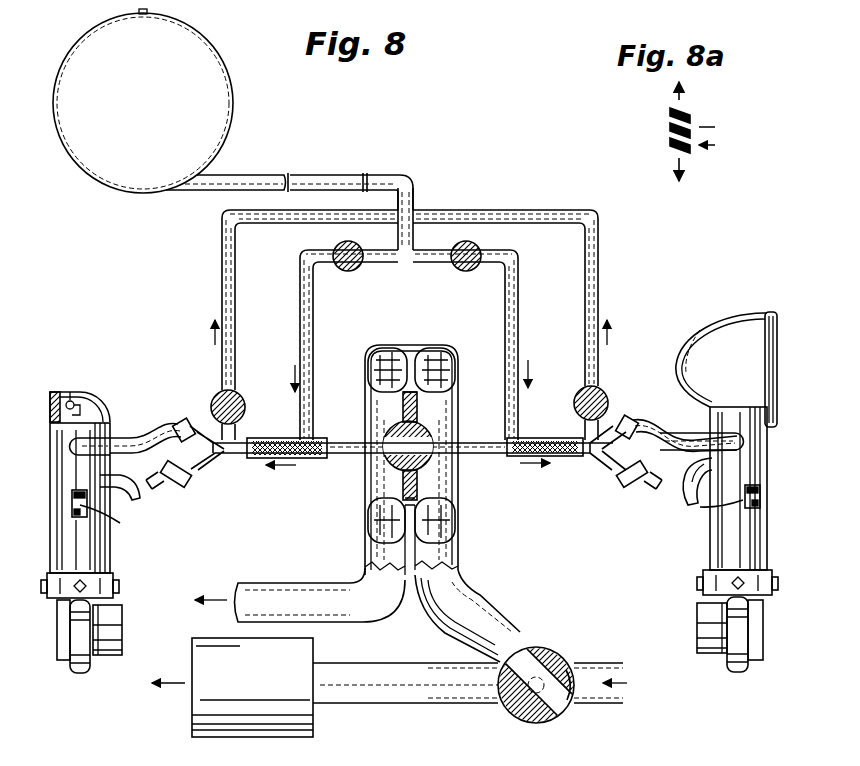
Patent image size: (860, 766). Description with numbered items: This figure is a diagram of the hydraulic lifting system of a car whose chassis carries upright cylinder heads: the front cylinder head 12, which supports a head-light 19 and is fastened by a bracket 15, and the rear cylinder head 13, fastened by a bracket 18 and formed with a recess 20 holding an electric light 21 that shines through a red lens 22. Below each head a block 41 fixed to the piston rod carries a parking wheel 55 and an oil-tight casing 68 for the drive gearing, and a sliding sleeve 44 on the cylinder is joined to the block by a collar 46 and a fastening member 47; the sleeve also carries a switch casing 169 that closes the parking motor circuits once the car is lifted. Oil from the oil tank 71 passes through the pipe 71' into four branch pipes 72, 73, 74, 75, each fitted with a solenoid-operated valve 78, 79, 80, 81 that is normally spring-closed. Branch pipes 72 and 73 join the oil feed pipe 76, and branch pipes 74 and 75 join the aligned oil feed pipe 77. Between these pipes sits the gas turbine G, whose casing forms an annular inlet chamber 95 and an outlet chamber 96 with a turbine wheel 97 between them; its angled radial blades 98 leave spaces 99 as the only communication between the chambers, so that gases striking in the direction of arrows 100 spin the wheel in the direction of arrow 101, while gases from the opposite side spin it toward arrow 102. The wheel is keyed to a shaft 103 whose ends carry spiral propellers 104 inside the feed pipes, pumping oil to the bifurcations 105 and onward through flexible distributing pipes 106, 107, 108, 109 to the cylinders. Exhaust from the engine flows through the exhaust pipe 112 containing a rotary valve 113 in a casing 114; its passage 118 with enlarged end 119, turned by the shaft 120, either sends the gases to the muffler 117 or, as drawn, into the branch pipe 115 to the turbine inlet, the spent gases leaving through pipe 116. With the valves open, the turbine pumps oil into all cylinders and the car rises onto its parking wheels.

In FIG. 8, the oil tank 71 is at (143, 101).
In FIG. 8, the pipe 71' is at (289, 175).
In FIG. 8, the branch pipe 72 is at (237, 268).
In FIG. 8, the branch pipe 73 is at (313, 297).
In FIG. 8, the branch pipe 74 is at (505, 296).
In FIG. 8, the branch pipe 75 is at (585, 268).
In FIG. 8, the oil feed pipe 76 is at (270, 460).
In FIG. 8, the oil feed pipe 77 is at (560, 458).
In FIG. 8, the valve 78 is at (216, 399).
In FIG. 8, the valve 79 is at (348, 271).
In FIG. 8, the valve 80 is at (461, 270).
In FIG. 8, the valve 81 is at (604, 396).
In FIG. 8, the gas turbine G is at (456, 392).
In FIG. 8, the annular inlet chamber 95 is at (442, 352).
In FIG. 8, the annular outlet chamber 96 is at (379, 349).
In FIG. 8, the turbine wheel 97 is at (418, 483).
In FIG. 8, the radial blades 98 is at (410, 383).
In FIG. 8A, the radial blades 98 is at (670, 127).
In FIG. 8A, the spaces between blades 99 is at (670, 142).
In FIG. 8A, the arrows 100 is at (712, 145).
In FIG. 8A, the arrow 101 is at (684, 170).
In FIG. 8A, the arrow 102 is at (679, 97).
In FIG. 8, the shaft 103 is at (341, 456).
In FIG. 8, the spiral propellers 104 is at (262, 440).
In FIG. 8, the bifurcations 105 is at (208, 460).
In FIG. 8, the distributing pipe 106 is at (644, 482).
In FIG. 8, the distributing pipe 107 is at (641, 421).
In FIG. 8, the distributing pipe 108 is at (170, 485).
In FIG. 8, the distributing pipe 109 is at (181, 422).
In FIG. 8, the exhaust pipe 112 is at (386, 670).
In FIG. 8, the valve 113 is at (556, 650).
In FIG. 8, the valve casing 114 is at (512, 718).
In FIG. 8, the branch pipe 115 is at (476, 596).
In FIG. 8, the pipe 116 is at (289, 588).
In FIG. 8, the muffler 117 is at (212, 705).
In FIG. 8, the passage 118 is at (516, 654).
In FIG. 8, the enlarged end 119 is at (572, 690).
In FIG. 8, the rotary shaft 120 is at (566, 706).
In FIG. 8, the front cylinder head 12 is at (767, 455).
In FIG. 8, the rear cylinder head 13 is at (62, 460).
In FIG. 8, the bracket 15 is at (693, 502).
In FIG. 8, the bracket 18 is at (118, 470).
In FIG. 8, the head-light 19 is at (718, 341).
In FIG. 8, the recess 20 is at (60, 394).
In FIG. 8, the electric light 21 is at (80, 392).
In FIG. 8, the lens 22 is at (50, 395).
In FIG. 8, the block 41 is at (60, 612).
In FIG. 8, the sleeve 44 is at (96, 558).
In FIG. 8, the collar 46 is at (98, 580).
In FIG. 8, the fastening member 47 is at (44, 583).
In FIG. 8, the parking wheel 55 is at (76, 668).
In FIG. 8, the casing 68 is at (113, 636).
In FIG. 8, the switch casing 169 is at (74, 505).